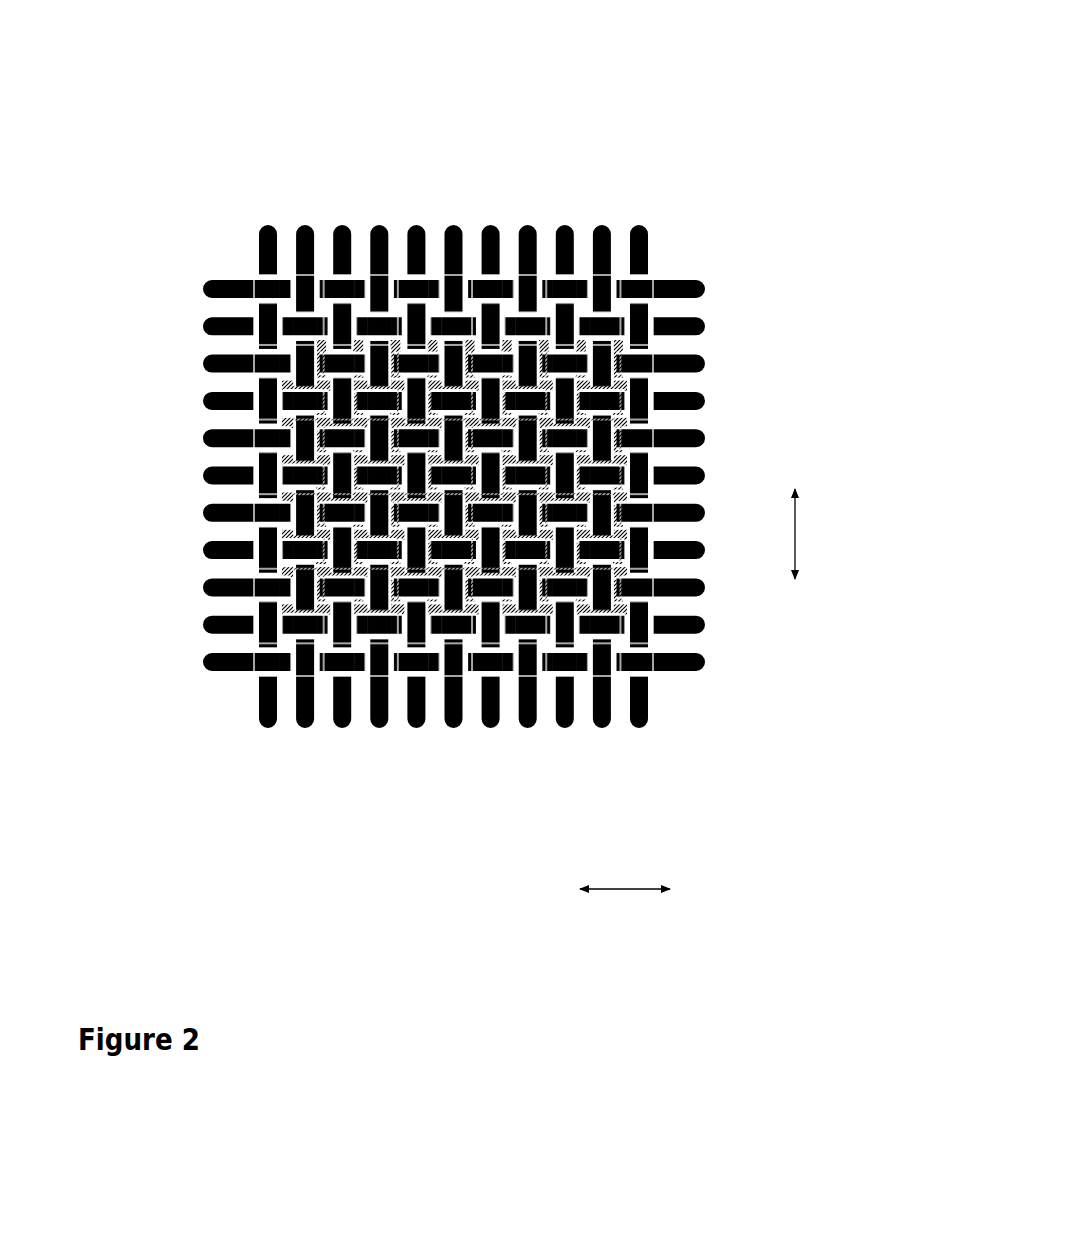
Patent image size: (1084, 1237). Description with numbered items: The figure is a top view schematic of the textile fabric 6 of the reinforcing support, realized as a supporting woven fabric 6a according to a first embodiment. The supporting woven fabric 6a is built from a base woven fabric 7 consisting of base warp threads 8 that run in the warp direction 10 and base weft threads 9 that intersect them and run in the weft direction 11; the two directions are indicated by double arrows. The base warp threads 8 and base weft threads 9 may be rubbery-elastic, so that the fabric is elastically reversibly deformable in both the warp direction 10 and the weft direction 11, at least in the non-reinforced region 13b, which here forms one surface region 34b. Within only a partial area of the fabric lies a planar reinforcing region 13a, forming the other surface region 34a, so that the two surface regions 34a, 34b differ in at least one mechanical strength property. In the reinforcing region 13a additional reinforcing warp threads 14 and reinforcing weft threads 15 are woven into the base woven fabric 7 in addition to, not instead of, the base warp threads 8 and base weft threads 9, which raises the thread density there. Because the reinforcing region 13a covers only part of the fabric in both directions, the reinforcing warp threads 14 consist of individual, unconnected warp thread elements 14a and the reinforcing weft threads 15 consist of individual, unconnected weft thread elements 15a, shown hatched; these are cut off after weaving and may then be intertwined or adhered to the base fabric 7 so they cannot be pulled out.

The textile fabric 6 is at (511, 427).
The supporting woven fabric 6a is at (197, 109).
The base woven fabric 7 is at (456, 276).
The base warp threads 8 is at (453, 462).
The base weft threads 9 is at (692, 290).
The warp direction 10 is at (815, 534).
The weft direction 11 is at (625, 872).
The reinforcing region 13a is at (333, 222).
The surface region 34a is at (357, 337).
The non-reinforced region 13b is at (595, 733).
The surface region 34b is at (573, 666).
The reinforcing warp threads 14 is at (471, 360).
The warp thread elements 14a is at (616, 366).
The reinforcing weft threads 15 is at (600, 498).
The weft thread elements 15a is at (452, 382).